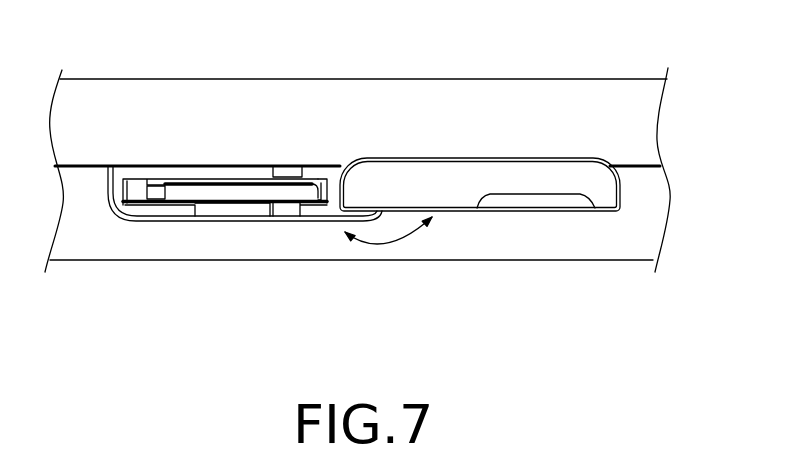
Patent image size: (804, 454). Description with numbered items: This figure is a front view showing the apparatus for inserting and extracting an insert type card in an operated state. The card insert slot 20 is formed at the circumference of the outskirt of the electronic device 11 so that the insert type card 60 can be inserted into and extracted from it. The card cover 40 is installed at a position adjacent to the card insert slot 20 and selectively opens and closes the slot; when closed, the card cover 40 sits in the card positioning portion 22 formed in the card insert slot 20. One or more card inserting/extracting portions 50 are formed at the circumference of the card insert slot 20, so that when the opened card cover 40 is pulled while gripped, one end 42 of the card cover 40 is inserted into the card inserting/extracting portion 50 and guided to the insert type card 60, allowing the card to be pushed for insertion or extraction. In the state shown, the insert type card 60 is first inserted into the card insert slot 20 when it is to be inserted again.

The electronic device 11 is at (483, 110).
The card insert slot 20 is at (138, 187).
The card positioning portion 22 is at (182, 211).
The card cover 40 is at (480, 161).
The one end of the card cover 42 is at (378, 178).
The card inserting/extracting portion 50 is at (310, 197).
The insert type card 60 is at (160, 190).